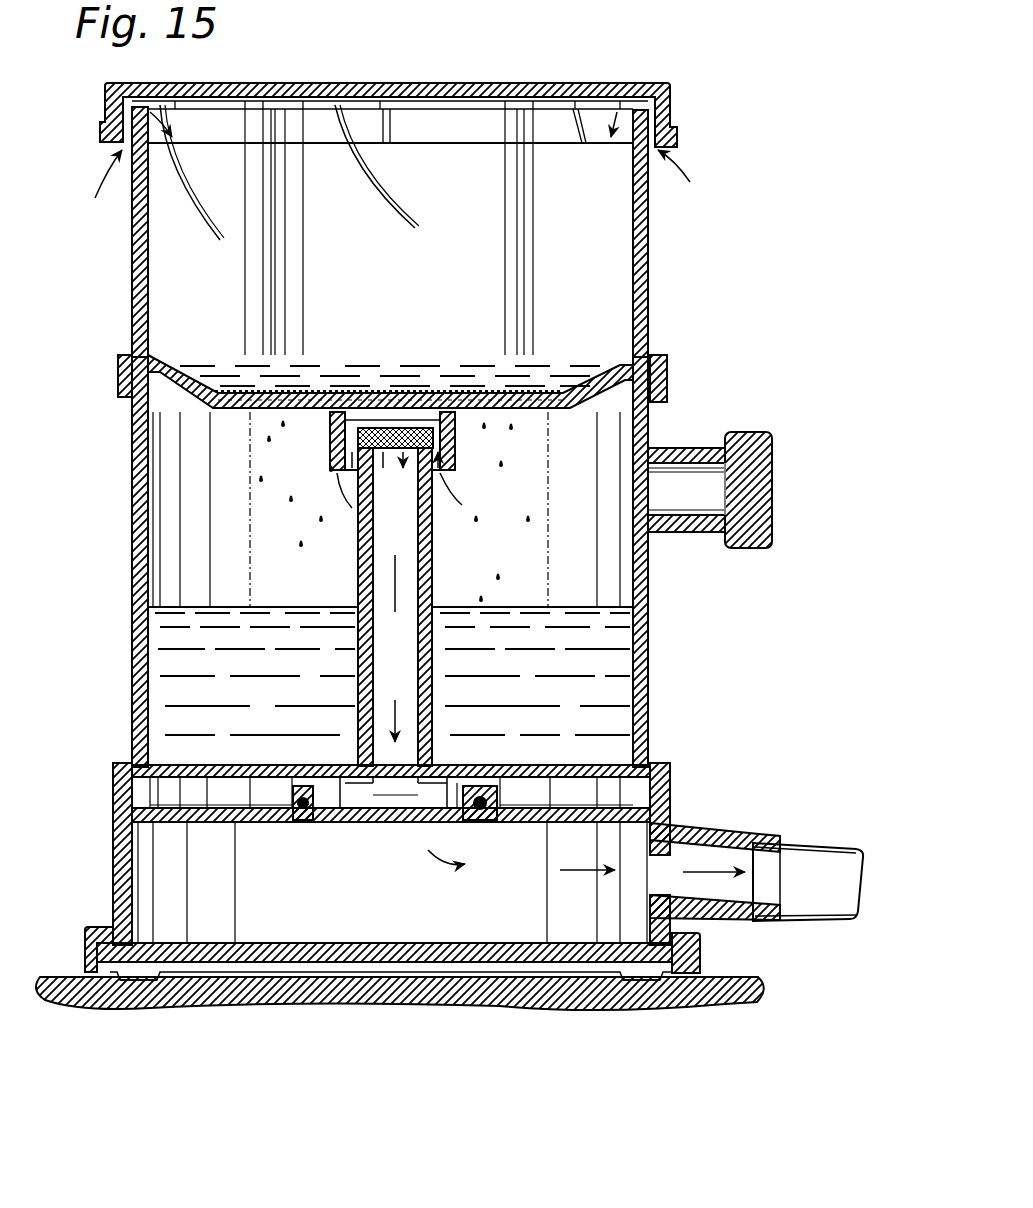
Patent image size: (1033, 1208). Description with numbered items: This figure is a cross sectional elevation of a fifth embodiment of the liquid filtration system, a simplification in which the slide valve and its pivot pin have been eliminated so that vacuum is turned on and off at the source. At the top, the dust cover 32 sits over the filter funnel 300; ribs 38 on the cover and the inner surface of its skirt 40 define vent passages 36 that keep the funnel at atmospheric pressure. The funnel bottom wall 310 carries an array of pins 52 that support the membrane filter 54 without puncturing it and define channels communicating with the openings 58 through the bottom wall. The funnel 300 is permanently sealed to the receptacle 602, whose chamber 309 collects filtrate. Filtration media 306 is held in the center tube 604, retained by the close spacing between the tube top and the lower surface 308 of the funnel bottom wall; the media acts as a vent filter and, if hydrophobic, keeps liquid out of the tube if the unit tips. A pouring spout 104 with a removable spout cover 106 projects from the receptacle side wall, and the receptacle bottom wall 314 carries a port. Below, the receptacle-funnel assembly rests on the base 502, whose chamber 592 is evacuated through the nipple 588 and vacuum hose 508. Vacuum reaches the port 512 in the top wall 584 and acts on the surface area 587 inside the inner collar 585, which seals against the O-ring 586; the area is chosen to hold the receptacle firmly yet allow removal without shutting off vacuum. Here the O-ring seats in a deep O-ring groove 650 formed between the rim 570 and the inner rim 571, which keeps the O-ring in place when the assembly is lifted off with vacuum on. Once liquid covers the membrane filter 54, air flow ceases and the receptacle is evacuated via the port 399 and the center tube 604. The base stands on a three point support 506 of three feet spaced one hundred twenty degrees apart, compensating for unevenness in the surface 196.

The cover 32 is at (543, 78).
The vent passages 36 is at (470, 105).
The ribs 38 is at (395, 105).
The skirt 40 is at (672, 118).
The pins 52 is at (336, 392).
The membrane filter 54 is at (522, 392).
The openings 58 is at (497, 418).
The pouring spout 104 is at (688, 534).
The spout cover 106 is at (773, 468).
The surface 196 is at (55, 977).
The filter funnel 300 is at (655, 262).
The filtration media 306 is at (432, 446).
The lower surface 308 is at (425, 392).
The chamber 309 is at (348, 576).
The bottom wall 310 is at (387, 392).
The bottom wall 314 is at (570, 768).
The port 399 is at (432, 708).
The base 502 is at (693, 806).
The three point support 506 is at (140, 982).
The vacuum hose 508 is at (828, 848).
The port 512 is at (395, 822).
The rim 570 is at (490, 785).
The inner rim 571 is at (456, 785).
The top wall 584 is at (260, 826).
The inner collar 585 is at (362, 822).
The O-ring 586 is at (318, 822).
The surface area 587 is at (348, 764).
The nipple 588 is at (733, 845).
The chamber 592 is at (456, 926).
The receptacle 602 is at (655, 657).
The center tube 604 is at (440, 562).
The deep O-ring groove 650 is at (476, 822).